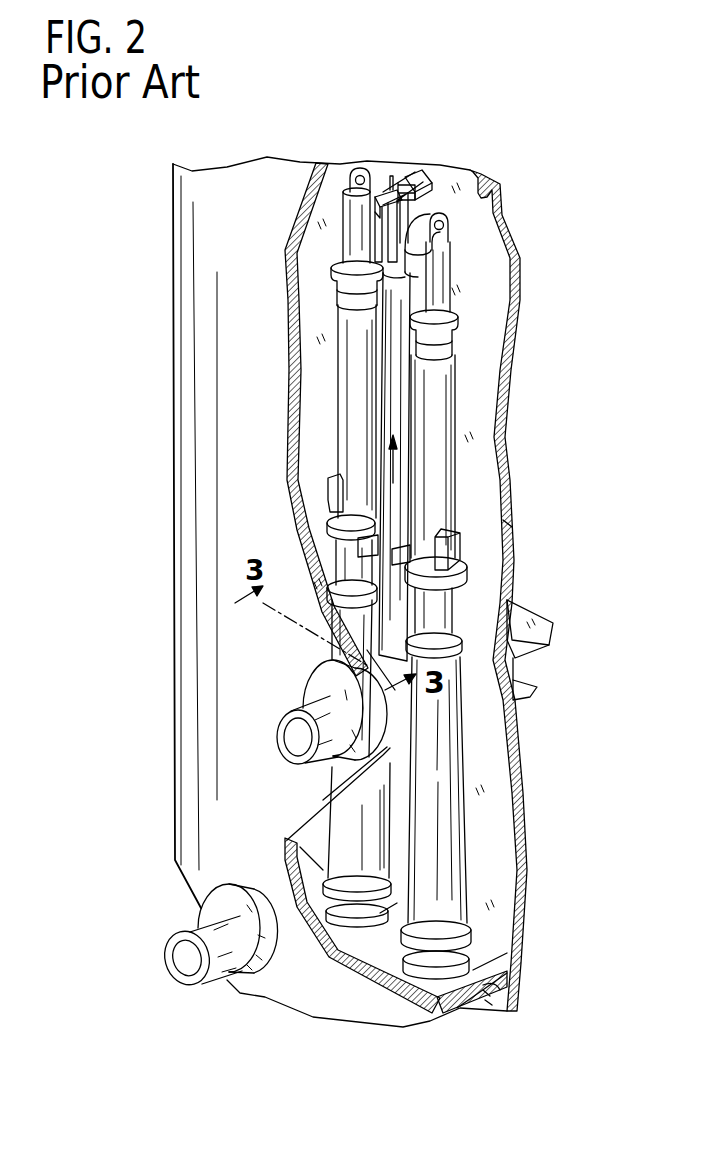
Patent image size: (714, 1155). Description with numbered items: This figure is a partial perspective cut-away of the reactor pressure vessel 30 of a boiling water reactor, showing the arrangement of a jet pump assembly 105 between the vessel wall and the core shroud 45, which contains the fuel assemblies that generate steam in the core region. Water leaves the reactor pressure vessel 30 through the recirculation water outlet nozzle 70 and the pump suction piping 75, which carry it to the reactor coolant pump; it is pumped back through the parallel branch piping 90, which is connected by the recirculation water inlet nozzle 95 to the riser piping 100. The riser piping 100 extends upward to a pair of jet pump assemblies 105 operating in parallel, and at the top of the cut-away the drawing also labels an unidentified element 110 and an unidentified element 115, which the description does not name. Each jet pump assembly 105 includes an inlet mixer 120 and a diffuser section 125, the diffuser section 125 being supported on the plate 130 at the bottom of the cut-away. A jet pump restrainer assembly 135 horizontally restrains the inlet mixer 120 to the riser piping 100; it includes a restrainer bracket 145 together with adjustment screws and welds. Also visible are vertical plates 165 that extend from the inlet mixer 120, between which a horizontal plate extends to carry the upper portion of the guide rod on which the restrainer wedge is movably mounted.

The reactor pressure vessel 30 is at (287, 1013).
The core shroud 45 is at (515, 790).
The recirculation water outlet nozzle 70 is at (250, 962).
The pump suction piping 75 is at (167, 968).
The piping 90 is at (290, 747).
The recirculation water inlet nozzle 95 is at (317, 687).
The riser piping 100 is at (380, 389).
The jet pump assembly 105 is at (352, 337).
The elbow fitting with clevis 110 is at (437, 260).
The piston rod 115 is at (450, 310).
The inlet mixer 120 is at (457, 423).
The diffuser section 125 is at (443, 857).
The plate 130 is at (517, 1000).
The jet pump restrainer assembly 135 is at (497, 523).
The restrainer bracket 145 is at (468, 572).
The vertical plates 165 is at (460, 528).